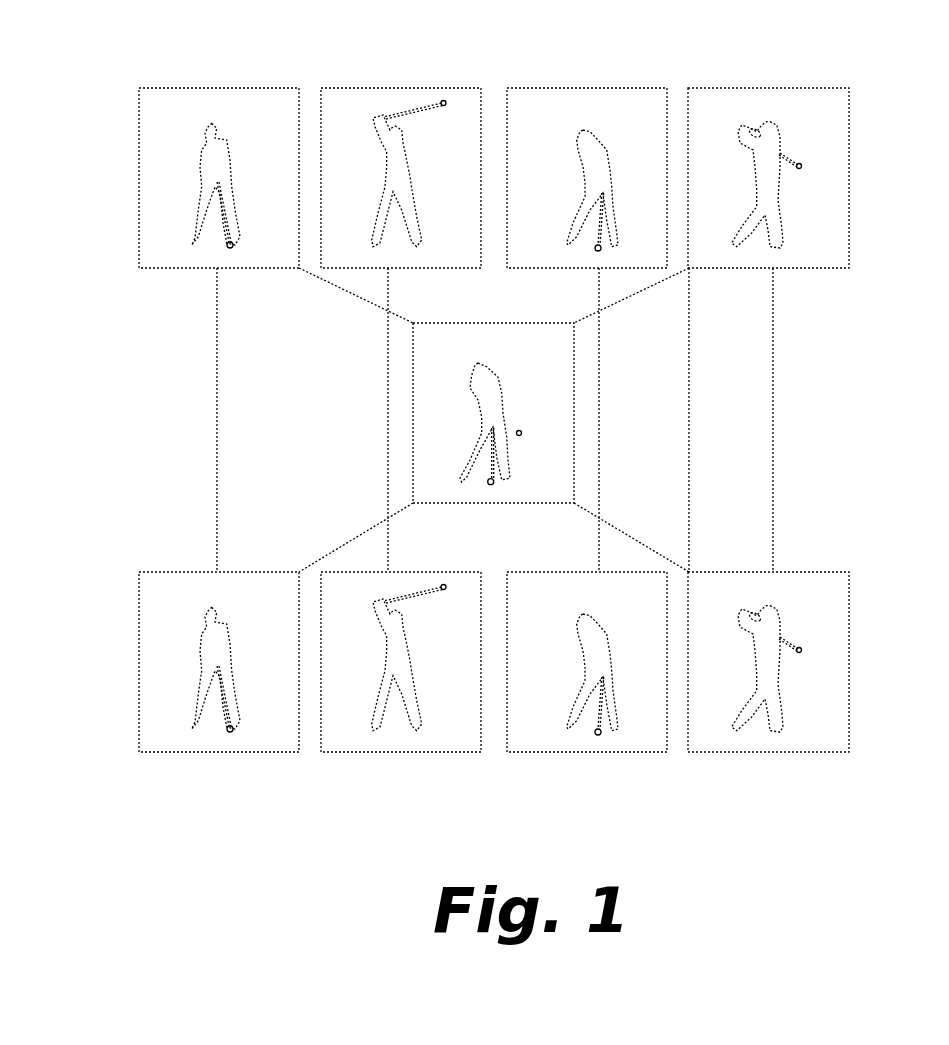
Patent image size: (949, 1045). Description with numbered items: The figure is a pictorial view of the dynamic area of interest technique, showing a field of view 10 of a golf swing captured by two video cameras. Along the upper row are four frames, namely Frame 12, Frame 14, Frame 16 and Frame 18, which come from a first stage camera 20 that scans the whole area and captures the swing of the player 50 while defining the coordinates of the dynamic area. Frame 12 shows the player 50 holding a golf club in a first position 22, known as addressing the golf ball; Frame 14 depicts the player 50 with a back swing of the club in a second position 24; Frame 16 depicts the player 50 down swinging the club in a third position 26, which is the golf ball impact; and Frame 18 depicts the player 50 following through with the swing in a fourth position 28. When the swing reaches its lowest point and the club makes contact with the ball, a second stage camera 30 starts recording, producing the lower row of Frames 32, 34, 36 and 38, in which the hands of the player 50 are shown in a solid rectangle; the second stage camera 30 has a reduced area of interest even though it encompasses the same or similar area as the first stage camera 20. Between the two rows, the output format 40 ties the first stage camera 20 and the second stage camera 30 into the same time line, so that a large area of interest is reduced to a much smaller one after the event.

The field of view 10 is at (90, 189).
The Frame 1 12 is at (139, 88).
The Frame 2 14 is at (321, 88).
The Frame 3 16 is at (518, 88).
The Frame 4 18 is at (687, 88).
The first stage camera 20 is at (851, 162).
The first position 22 is at (235, 175).
The second position 24 is at (393, 105).
The third position 26 is at (632, 207).
The fourth position 28 is at (774, 133).
The second stage camera 30 is at (835, 677).
The Frame 32 is at (233, 658).
The Frame 34 is at (393, 589).
The Frame 36 is at (623, 690).
The Frame 38 is at (774, 616).
The output format 40 is at (523, 456).
The player 50 is at (208, 180).